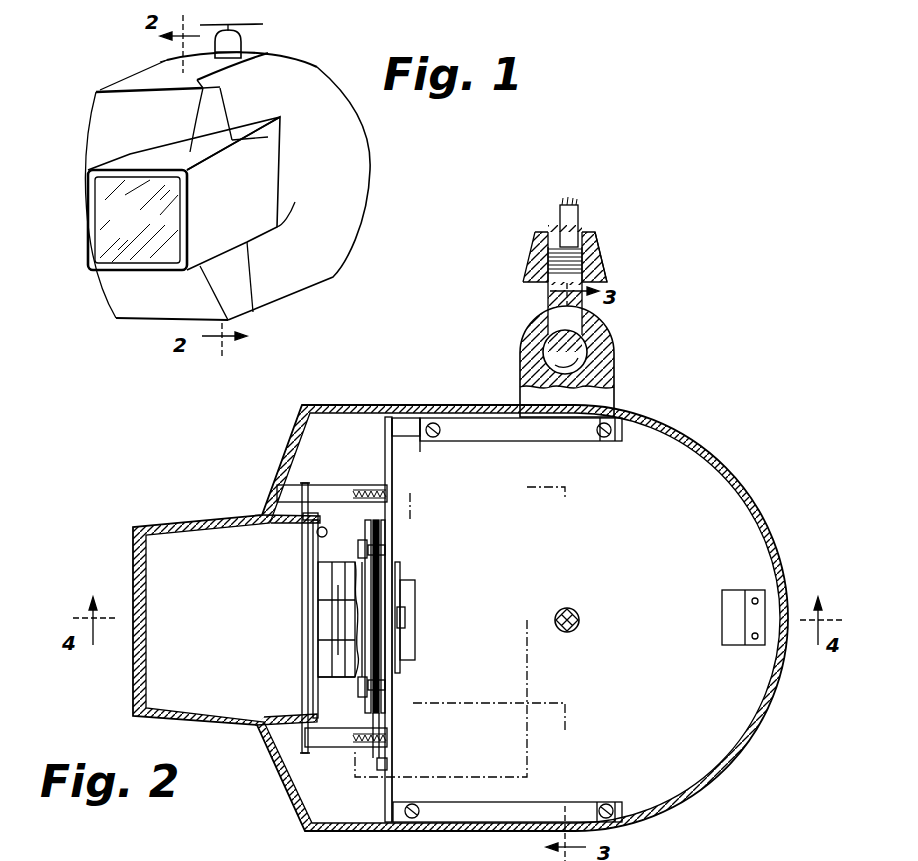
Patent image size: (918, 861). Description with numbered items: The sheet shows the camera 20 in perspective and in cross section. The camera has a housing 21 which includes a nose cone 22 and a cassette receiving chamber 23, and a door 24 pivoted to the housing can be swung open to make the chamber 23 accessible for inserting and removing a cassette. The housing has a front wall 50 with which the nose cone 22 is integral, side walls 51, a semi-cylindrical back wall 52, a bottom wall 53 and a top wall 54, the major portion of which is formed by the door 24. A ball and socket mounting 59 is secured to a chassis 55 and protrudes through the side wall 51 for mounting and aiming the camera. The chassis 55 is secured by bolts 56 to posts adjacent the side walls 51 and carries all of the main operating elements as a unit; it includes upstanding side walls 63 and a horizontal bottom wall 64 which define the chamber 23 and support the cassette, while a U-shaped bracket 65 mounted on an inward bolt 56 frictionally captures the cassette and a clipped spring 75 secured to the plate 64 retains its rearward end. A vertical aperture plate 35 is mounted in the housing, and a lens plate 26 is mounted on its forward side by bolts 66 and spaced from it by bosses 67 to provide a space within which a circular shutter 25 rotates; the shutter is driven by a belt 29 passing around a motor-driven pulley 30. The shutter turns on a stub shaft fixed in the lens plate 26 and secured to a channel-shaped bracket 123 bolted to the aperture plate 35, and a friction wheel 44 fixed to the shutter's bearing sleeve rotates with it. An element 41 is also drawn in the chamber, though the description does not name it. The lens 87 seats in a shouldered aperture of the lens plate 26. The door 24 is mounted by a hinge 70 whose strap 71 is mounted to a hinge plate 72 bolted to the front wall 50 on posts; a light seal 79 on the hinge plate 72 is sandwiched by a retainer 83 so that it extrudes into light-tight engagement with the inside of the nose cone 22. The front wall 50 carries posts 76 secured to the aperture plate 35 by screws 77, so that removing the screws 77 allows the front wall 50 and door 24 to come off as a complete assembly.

In FIG. 1, the camera 20 is at (430, 149).
In FIG. 2, the camera 20 is at (779, 400).
In FIG. 1, the housing 21 is at (120, 81).
In FIG. 2, the housing 21 is at (345, 385).
In FIG. 1, the nose cone 22 is at (128, 163).
In FIG. 2, the nose cone 22 is at (182, 526).
In FIG. 2, the cassette receiving chamber 23 is at (692, 536).
In FIG. 1, the door 24 is at (330, 185).
In FIG. 2, the circular shutter 25 is at (392, 512).
In FIG. 2, the lens plate 26 is at (366, 535).
In FIG. 2, the belt 29 is at (383, 720).
In FIG. 2, the pulley 30 is at (387, 764).
In FIG. 2, the aperture plate 35 is at (380, 468).
In FIG. 2, the pivot shaft 41 is at (578, 612).
In FIG. 2, the friction wheel 44 is at (412, 616).
In FIG. 1, the front wall 50 is at (120, 302).
In FIG. 2, the front wall 50 is at (285, 447).
In FIG. 1, the side walls 51 is at (162, 75).
In FIG. 2, the side walls 51 is at (418, 405).
In FIG. 1, the semi-cylindrical back wall 52 is at (315, 64).
In FIG. 2, the semi-cylindrical back wall 52 is at (787, 584).
In FIG. 1, the bottom wall 53 is at (82, 197).
In FIG. 1, the top wall 54 is at (212, 115).
In FIG. 2, the chassis 55 is at (643, 812).
In FIG. 2, the bolts 56 is at (438, 438).
In FIG. 1, the ball and socket mounting 59 is at (240, 45).
In FIG. 2, the ball and socket mounting 59 is at (622, 352).
In FIG. 2, the upstanding side walls 63 is at (405, 424).
In FIG. 2, the bottom wall 64 is at (661, 625).
In FIG. 2, the U-shaped bracket 65 is at (522, 442).
In FIG. 2, the bolts 66 is at (360, 551).
In FIG. 2, the bosses 67 is at (380, 550).
In FIG. 2, the hinge 70 is at (316, 592).
In FIG. 2, the strap 71 is at (322, 634).
In FIG. 2, the hinge plate 72 is at (305, 672).
In FIG. 2, the clipped spring 75 is at (735, 590).
In FIG. 2, the posts 76 is at (330, 487).
In FIG. 2, the screws 77 is at (398, 495).
In FIG. 2, the light seal 79 is at (302, 571).
In FIG. 2, the retainer 83 is at (317, 536).
In FIG. 2, the lens 87 is at (350, 604).
In FIG. 2, the channel-shaped bracket 123 is at (410, 600).